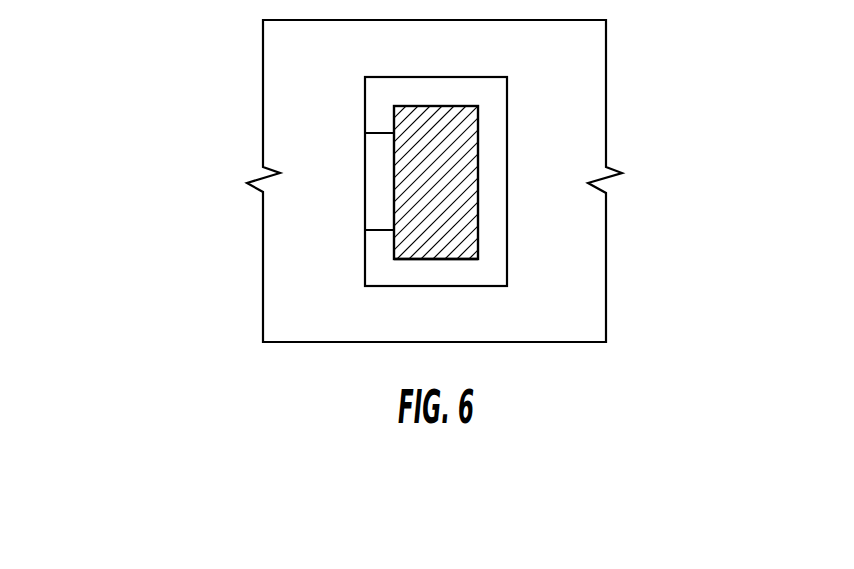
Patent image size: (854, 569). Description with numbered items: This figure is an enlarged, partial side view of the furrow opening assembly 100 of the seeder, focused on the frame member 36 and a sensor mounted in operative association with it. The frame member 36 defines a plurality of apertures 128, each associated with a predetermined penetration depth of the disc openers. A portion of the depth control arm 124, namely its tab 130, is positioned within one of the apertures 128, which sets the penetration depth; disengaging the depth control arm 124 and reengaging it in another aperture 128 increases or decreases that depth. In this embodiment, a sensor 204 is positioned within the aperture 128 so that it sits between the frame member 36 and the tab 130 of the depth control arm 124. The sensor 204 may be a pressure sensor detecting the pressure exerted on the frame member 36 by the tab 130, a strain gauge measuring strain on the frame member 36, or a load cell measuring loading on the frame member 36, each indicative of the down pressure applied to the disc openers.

The furrow opening assembly 100 is at (178, 60).
The frame member 36 is at (590, 238).
The aperture 128 is at (497, 182).
The sensor 204 is at (375, 182).
The tab 130 is at (479, 143).
The depth control arm 124 is at (422, 263).